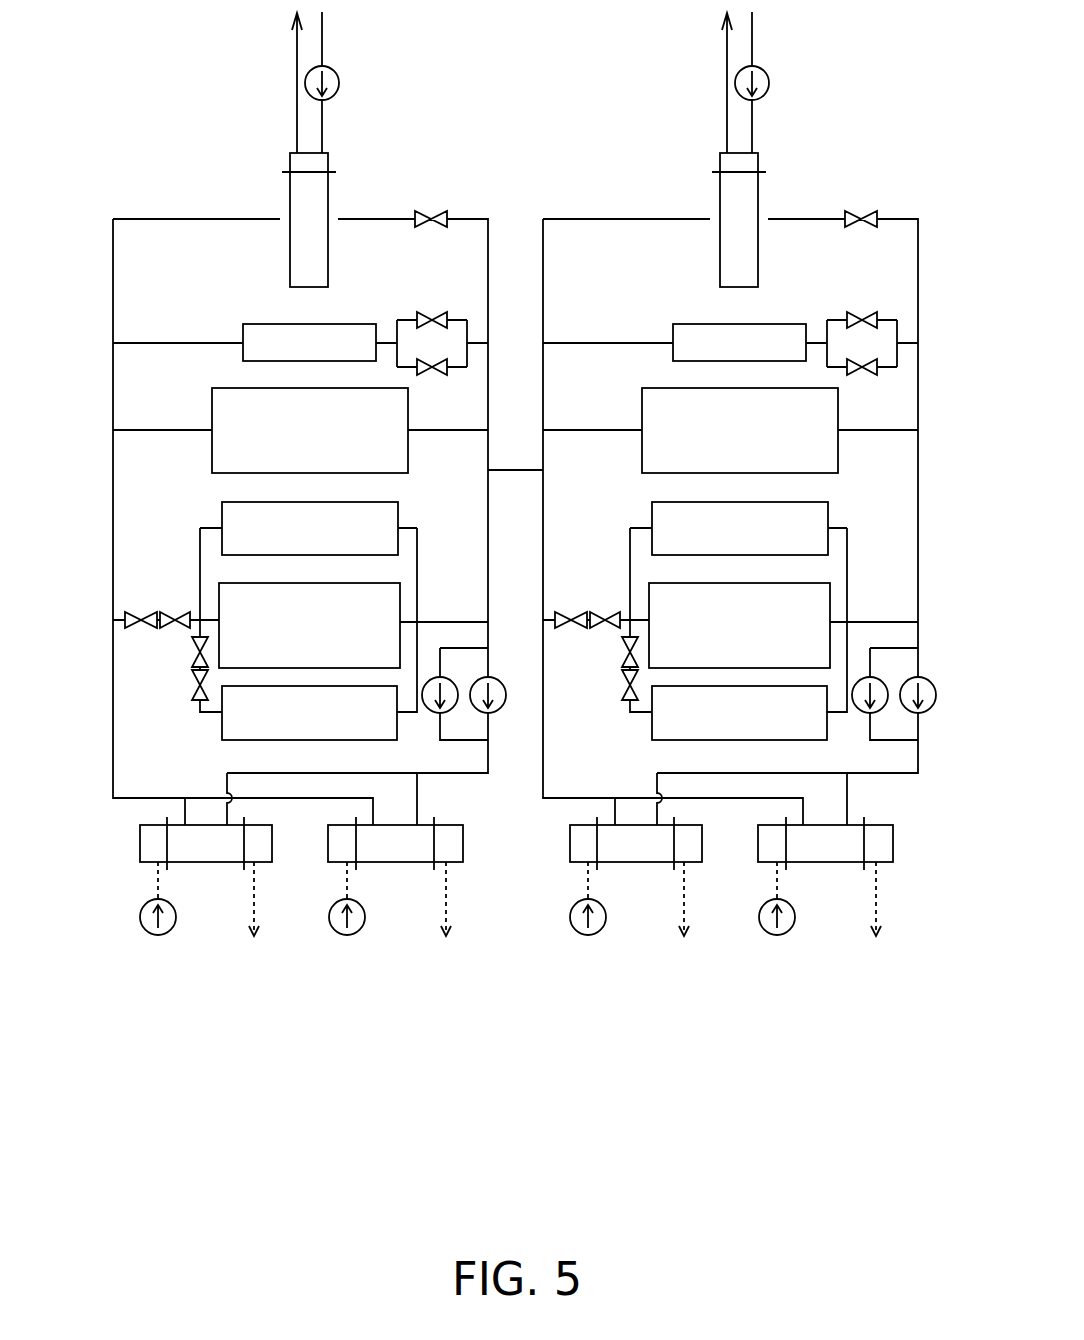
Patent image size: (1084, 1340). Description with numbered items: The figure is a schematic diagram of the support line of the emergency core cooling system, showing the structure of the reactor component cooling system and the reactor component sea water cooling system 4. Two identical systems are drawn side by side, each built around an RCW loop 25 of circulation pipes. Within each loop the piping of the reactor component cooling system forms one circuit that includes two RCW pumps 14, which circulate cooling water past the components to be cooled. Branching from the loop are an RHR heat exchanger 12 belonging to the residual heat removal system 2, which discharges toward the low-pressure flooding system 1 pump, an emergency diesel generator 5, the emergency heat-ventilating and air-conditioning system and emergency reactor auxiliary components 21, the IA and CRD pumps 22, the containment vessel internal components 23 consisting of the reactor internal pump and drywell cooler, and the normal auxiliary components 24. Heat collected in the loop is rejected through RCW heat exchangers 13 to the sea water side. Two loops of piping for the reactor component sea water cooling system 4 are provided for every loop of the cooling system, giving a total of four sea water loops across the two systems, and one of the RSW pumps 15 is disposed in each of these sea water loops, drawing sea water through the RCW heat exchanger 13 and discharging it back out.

The low-pressure flooding system 1 is at (108, 552).
The residual heat removal system 2 is at (347, 206).
The reactor component sea water cooling system 4 is at (186, 996).
The emergency diesel generator 5 is at (280, 323).
The RHR heat exchanger 12 is at (290, 200).
The RCW heat exchanger 13 is at (140, 842).
The RCW pumps 14 is at (496, 681).
The RSW pumps 15 is at (140, 917).
The emergency HVAC and emergency reactor auxiliary components 21 is at (235, 388).
The IA and CRD pumps 22 is at (265, 502).
The containment vessel internal components 23 is at (265, 583).
The normal auxiliary components 24 is at (265, 740).
The RCW loop 25 is at (113, 707).